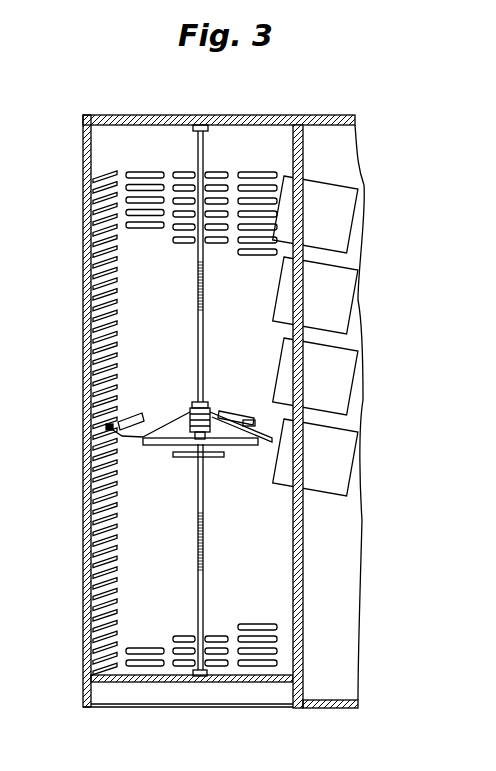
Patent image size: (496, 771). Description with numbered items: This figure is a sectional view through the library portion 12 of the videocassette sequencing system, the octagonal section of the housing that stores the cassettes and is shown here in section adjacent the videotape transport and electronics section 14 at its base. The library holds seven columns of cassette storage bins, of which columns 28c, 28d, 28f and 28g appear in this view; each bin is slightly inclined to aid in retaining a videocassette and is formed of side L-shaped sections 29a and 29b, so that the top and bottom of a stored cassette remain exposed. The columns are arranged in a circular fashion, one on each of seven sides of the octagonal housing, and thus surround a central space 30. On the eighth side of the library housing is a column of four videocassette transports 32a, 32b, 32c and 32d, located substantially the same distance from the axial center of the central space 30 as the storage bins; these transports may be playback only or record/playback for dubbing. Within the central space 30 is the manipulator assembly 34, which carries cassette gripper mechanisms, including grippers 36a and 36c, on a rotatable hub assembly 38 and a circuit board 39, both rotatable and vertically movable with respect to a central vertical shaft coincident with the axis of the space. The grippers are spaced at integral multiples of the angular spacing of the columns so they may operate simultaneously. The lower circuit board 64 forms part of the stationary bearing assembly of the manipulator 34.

The library portion 12 is at (83, 682).
The videotape transport and electronics section 14 is at (325, 710).
The column of cassette storage bins 28c is at (133, 162).
The column of cassette storage bins 28d is at (110, 168).
The column of cassette storage bins 28f is at (213, 172).
The column of cassette storage bins 28g is at (262, 170).
The L-shaped section 29a is at (170, 170).
The L-shaped section 29b is at (238, 170).
The central space 30 is at (170, 508).
The videocassette transport 32a is at (350, 226).
The videocassette transport 32b is at (350, 307).
The videocassette transport 32c is at (350, 388).
The videocassette transport 32d is at (350, 478).
The manipulator assembly 34 is at (145, 380).
The cassette gripper mechanism 36a is at (229, 414).
The cassette gripper mechanism 36c is at (100, 416).
The hub assembly 38 is at (210, 406).
The circuit board 39 is at (242, 446).
The lower circuit board 64 is at (212, 457).